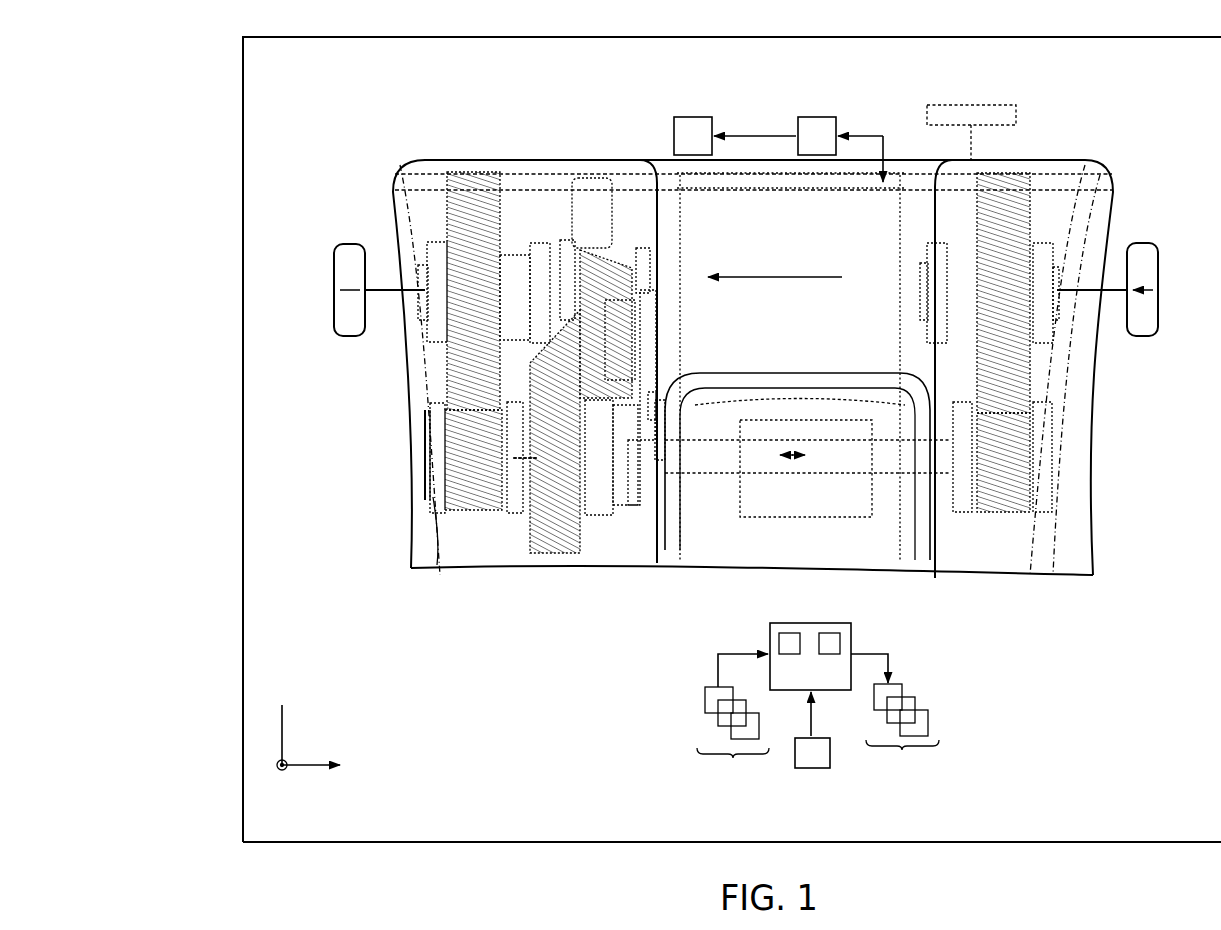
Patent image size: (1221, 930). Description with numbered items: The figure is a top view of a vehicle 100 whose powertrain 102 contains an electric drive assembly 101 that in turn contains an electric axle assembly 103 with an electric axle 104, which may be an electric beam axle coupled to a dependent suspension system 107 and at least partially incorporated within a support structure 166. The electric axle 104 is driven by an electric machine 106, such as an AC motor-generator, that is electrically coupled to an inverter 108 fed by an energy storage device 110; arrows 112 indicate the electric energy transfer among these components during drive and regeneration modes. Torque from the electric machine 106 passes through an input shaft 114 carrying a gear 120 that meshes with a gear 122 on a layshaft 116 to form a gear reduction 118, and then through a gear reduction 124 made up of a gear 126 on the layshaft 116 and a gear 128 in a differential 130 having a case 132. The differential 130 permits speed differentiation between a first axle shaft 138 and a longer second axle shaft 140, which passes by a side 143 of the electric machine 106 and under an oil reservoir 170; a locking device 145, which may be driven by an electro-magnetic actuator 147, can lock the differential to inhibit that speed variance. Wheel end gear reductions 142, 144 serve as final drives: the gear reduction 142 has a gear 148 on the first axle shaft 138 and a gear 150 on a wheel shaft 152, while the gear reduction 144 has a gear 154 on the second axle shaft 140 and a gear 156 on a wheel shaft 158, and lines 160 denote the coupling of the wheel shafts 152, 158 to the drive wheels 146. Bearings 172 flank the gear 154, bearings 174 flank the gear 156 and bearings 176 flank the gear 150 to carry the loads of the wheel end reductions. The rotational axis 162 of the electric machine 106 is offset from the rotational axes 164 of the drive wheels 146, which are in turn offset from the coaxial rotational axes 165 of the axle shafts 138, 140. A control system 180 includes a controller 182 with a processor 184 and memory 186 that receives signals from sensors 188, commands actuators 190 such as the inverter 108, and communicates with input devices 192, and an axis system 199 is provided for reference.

The vehicle 100 is at (243, 63).
The electric drive assembly 101 is at (293, 100).
The powertrain 102 is at (366, 163).
The electric axle assembly 103 is at (311, 170).
The electric axle 104 is at (436, 150).
The electric machine 106 is at (792, 222).
The dependent suspension system 107 is at (968, 105).
The inverter 108 is at (820, 117).
The energy storage device 110 is at (692, 117).
The arrows 112 is at (743, 135).
The input shaft 114 is at (643, 272).
The layshaft 116 is at (603, 263).
The gear reduction 118 is at (593, 210).
The gear 120 is at (598, 330).
The gear 122 is at (620, 345).
The gear reduction 124 is at (573, 568).
The gear 126 is at (567, 340).
The gear 128 is at (542, 505).
The differential 130 is at (598, 540).
The case 132 is at (606, 500).
The first axle shaft 138 is at (425, 455).
The second axle shaft 140 is at (913, 467).
The wheel end gear reduction 142 is at (428, 408).
The side 143 is at (695, 375).
The wheel end gear reduction 144 is at (1058, 415).
The locking device 145 is at (637, 512).
The drive wheels 146 is at (352, 337).
The electro-magnetic actuator 147 is at (669, 372).
The gear 148 is at (457, 503).
The gear 150 is at (476, 366).
The wheel shaft 152 is at (420, 282).
The gear 154 is at (1007, 483).
The gear 156 is at (1013, 383).
The wheel shaft 158 is at (1090, 180).
The lines 160 is at (398, 297).
The rotational axis 162 is at (793, 272).
The rotational axes 164 is at (348, 287).
The rotational axes 165 is at (523, 463).
The support structure 166 is at (1082, 553).
The oil reservoir 170 is at (433, 497).
The bearings 172 is at (963, 503).
The bearings 174 is at (1042, 245).
The bearings 176 is at (440, 252).
The control system 180 is at (930, 653).
The controller 182 is at (819, 623).
The processor 184 is at (781, 635).
The memory 186 is at (840, 648).
The sensors 188 is at (733, 730).
The actuators 190 is at (895, 721).
The input devices 192 is at (813, 770).
The axis system 199 is at (330, 720).